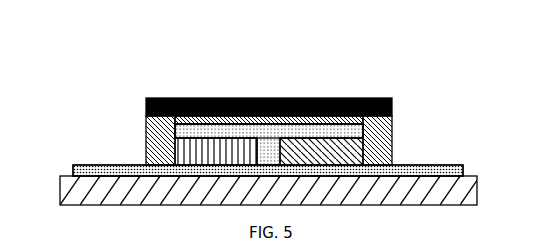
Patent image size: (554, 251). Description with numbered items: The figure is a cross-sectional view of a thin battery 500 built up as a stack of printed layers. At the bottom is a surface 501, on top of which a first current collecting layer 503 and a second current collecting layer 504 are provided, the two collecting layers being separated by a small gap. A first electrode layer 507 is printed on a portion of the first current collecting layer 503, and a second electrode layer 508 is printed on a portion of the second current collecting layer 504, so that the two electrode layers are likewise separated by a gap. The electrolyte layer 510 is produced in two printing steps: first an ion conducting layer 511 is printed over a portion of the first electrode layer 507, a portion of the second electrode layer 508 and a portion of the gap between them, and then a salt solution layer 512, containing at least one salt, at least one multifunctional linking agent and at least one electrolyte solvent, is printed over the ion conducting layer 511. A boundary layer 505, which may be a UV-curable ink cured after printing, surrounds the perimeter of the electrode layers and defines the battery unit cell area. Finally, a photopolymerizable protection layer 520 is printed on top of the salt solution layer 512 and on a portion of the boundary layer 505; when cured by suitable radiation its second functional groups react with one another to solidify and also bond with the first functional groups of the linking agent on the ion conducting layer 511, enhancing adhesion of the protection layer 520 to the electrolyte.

The thin battery 500 is at (270, 112).
The surface 501 is at (457, 193).
The first current collecting layer 503 is at (463, 166).
The second current collecting layer 504 is at (76, 169).
The boundary layer 505 is at (157, 135).
The first electrode layer 507 is at (330, 160).
The second electrode layer 508 is at (183, 158).
The electrolyte layer 510 is at (253, 98).
The ion conducting layer 511 is at (303, 130).
The salt solution layer 512 is at (287, 98).
The photopolymerizable protection layer 520 is at (393, 101).